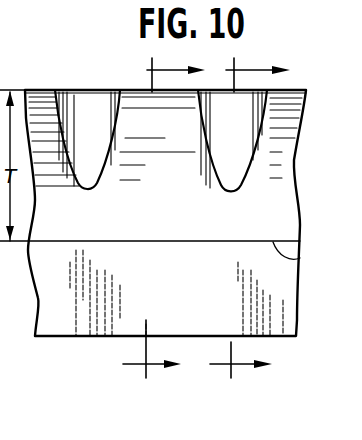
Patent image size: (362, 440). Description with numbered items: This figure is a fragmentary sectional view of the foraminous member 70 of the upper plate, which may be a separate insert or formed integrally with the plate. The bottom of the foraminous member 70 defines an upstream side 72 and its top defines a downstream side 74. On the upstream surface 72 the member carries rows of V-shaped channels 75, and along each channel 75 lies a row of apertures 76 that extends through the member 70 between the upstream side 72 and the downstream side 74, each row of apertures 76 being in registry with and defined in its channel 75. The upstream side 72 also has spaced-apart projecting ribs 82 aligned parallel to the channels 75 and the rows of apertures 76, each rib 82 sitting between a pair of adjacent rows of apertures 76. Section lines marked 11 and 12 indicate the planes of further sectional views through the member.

The foraminous member 70 is at (302, 199).
The upstream side 72 is at (300, 258).
The downstream side 74 is at (292, 89).
The V-shaped channels 75 is at (292, 220).
The apertures 76 is at (205, 122).
The projecting ribs 82 is at (285, 294).
The section line 11- 11 is at (149, 215).
The section line 12- 12 is at (266, 216).